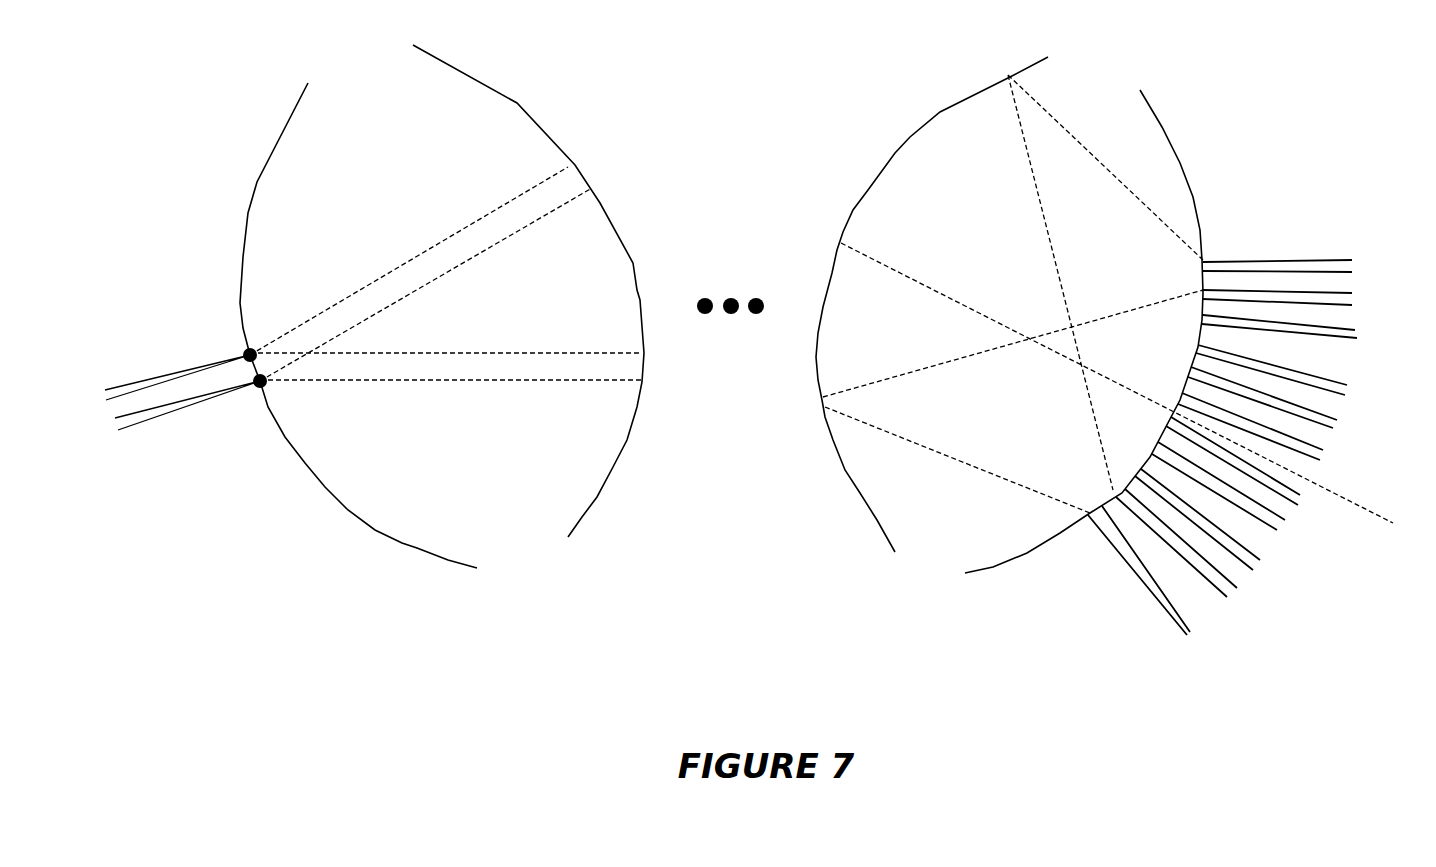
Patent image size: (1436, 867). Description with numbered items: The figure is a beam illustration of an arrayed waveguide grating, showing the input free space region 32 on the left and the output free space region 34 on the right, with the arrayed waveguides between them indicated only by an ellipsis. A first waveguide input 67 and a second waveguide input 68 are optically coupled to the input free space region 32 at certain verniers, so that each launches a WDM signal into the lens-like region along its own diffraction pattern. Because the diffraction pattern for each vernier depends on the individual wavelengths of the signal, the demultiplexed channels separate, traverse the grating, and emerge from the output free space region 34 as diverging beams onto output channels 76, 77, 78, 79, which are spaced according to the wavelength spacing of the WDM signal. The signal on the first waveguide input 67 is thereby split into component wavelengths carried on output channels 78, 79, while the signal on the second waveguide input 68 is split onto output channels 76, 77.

The input free space region 32 is at (428, 503).
The output free space region 34 is at (1000, 497).
The first waveguide input 67 is at (246, 350).
The second waveguide input 68 is at (258, 388).
The output channel 76 is at (1237, 594).
The output channel 77 is at (1197, 630).
The output channel 78 is at (1353, 266).
The output channel 79 is at (1353, 297).